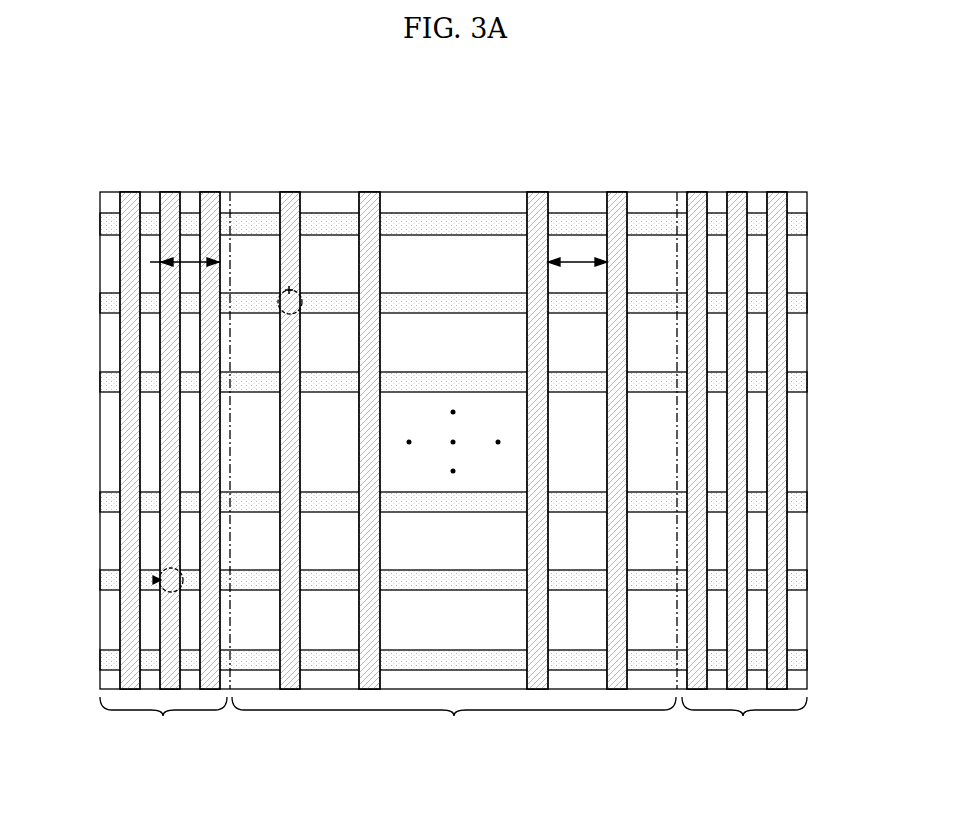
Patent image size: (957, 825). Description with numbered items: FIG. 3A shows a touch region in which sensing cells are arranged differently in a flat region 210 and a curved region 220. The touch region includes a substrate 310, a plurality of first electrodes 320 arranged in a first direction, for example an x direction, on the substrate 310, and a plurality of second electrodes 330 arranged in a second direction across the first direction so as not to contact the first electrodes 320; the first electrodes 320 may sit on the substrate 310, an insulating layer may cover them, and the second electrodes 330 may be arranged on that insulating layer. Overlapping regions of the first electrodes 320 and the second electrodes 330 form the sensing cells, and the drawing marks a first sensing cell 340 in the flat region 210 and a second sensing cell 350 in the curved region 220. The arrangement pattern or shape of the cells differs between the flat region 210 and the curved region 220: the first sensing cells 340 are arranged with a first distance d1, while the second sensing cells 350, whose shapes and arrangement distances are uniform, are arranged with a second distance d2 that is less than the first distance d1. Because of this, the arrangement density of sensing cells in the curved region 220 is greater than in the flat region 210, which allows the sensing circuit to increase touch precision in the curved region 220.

The substrate 310 is at (488, 191).
The first electrodes 320 is at (800, 226).
The second electrodes 330 is at (776, 200).
The first sensing cell 340 is at (289, 289).
The second sensing cell 350 is at (157, 580).
The flat region 210 is at (454, 721).
The curved region 220 is at (453, 721).
The first distance d1 is at (578, 261).
The second distance d2 is at (192, 261).